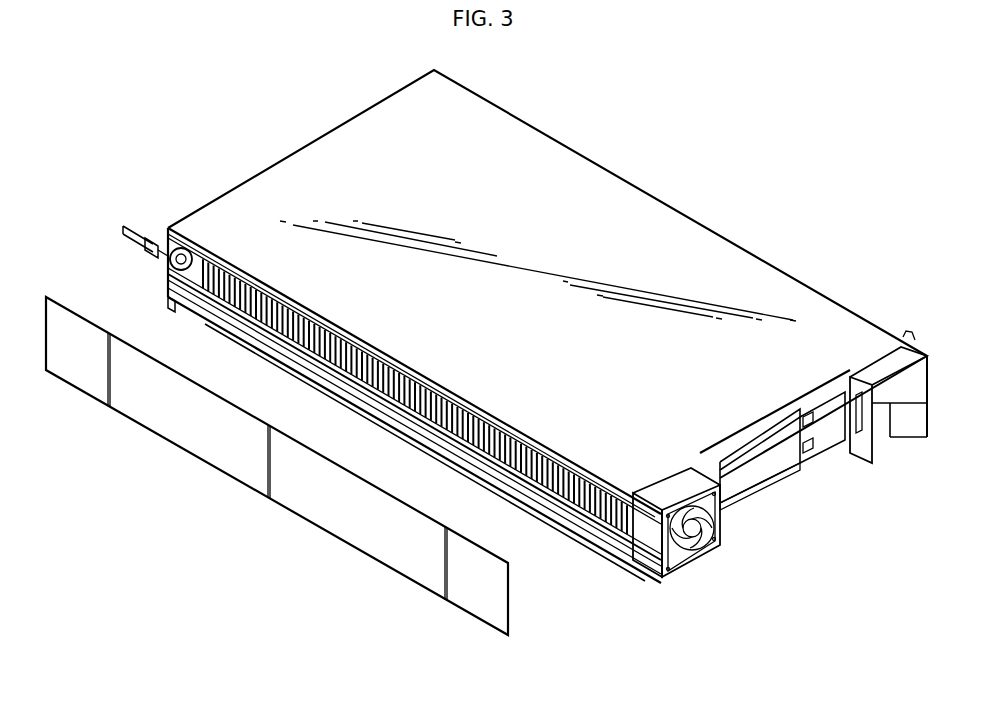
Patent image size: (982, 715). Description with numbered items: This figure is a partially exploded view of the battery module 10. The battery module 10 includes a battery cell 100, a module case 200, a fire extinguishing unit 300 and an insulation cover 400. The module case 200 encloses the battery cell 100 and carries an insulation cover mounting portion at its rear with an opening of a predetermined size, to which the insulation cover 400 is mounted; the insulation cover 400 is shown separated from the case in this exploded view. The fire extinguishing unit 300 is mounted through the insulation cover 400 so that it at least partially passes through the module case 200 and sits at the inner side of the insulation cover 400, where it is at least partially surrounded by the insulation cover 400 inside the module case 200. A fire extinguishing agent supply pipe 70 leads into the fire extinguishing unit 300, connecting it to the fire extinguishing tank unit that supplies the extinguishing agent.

The battery module 10 is at (708, 132).
The module case 200 is at (585, 207).
The battery cell 100 is at (616, 532).
The fire extinguishing unit 300 is at (152, 262).
The insulation cover 400 is at (165, 293).
The fire extinguishing agent supply pipe 70 is at (133, 222).